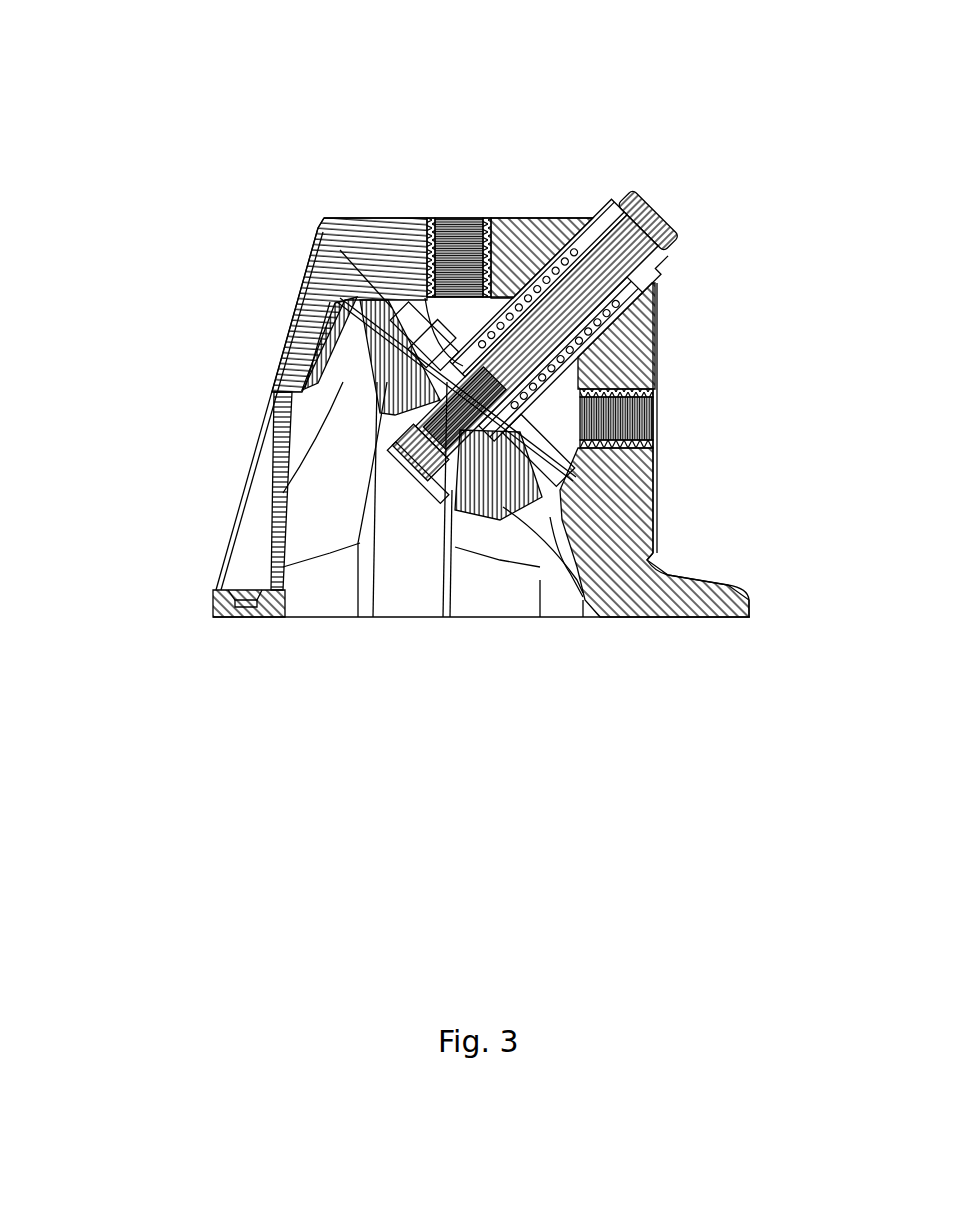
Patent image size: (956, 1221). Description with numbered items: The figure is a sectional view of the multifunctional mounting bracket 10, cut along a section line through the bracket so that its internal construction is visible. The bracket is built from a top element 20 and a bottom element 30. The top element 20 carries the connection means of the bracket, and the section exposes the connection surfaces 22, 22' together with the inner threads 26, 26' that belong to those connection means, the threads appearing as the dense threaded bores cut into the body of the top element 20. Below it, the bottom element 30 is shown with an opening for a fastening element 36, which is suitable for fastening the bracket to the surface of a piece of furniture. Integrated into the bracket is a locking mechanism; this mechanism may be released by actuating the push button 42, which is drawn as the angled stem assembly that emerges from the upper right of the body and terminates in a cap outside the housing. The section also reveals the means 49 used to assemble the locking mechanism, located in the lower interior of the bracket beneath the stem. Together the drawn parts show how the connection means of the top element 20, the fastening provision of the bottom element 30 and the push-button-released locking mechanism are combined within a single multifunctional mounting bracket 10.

The multifunctional mounting bracket 10 is at (558, 89).
The top element 20 is at (628, 487).
The connection surface 22 is at (428, 274).
The connection surface 22' is at (665, 336).
The inner thread 26 is at (453, 227).
The inner thread 26' is at (658, 418).
The bottom element 30 is at (312, 305).
The fastening element 36 is at (229, 590).
The push button 42 is at (640, 219).
The means used to assemble the locking mechanism 49 is at (420, 467).